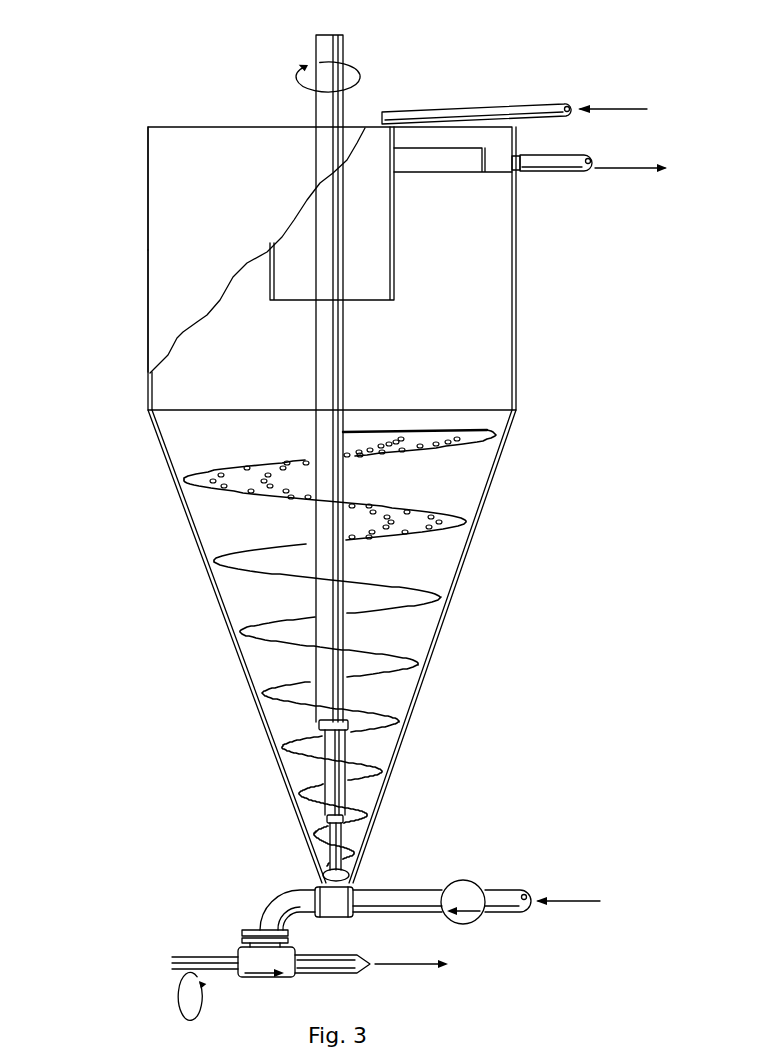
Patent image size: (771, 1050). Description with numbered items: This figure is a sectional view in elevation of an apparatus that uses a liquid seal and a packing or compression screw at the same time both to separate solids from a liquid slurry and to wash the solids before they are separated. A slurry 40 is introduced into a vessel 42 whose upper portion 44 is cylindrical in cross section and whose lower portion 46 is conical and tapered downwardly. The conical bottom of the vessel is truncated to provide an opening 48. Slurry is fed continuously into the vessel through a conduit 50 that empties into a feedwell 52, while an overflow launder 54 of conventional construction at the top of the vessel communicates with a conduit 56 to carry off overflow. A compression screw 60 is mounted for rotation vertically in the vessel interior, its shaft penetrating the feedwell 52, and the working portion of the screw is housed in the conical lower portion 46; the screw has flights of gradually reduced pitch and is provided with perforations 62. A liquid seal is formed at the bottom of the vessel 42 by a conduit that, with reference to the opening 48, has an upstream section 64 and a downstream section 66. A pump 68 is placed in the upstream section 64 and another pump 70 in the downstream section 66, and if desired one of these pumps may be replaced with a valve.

The slurry 40 is at (202, 387).
The vessel 42 is at (148, 272).
The upper portion 44 is at (148, 192).
The lower portion 46 is at (222, 611).
The opening 48 is at (356, 872).
The conduit 50 is at (458, 107).
The feedwell 52 is at (395, 247).
The overflow launder 54 is at (492, 153).
The conduit 56 is at (573, 173).
The compression screw 60 is at (345, 44).
The perforations 62 is at (272, 463).
The upstream section 64 is at (388, 890).
The downstream section 66 is at (263, 903).
The pump 68 is at (478, 882).
The pump 70 is at (272, 983).